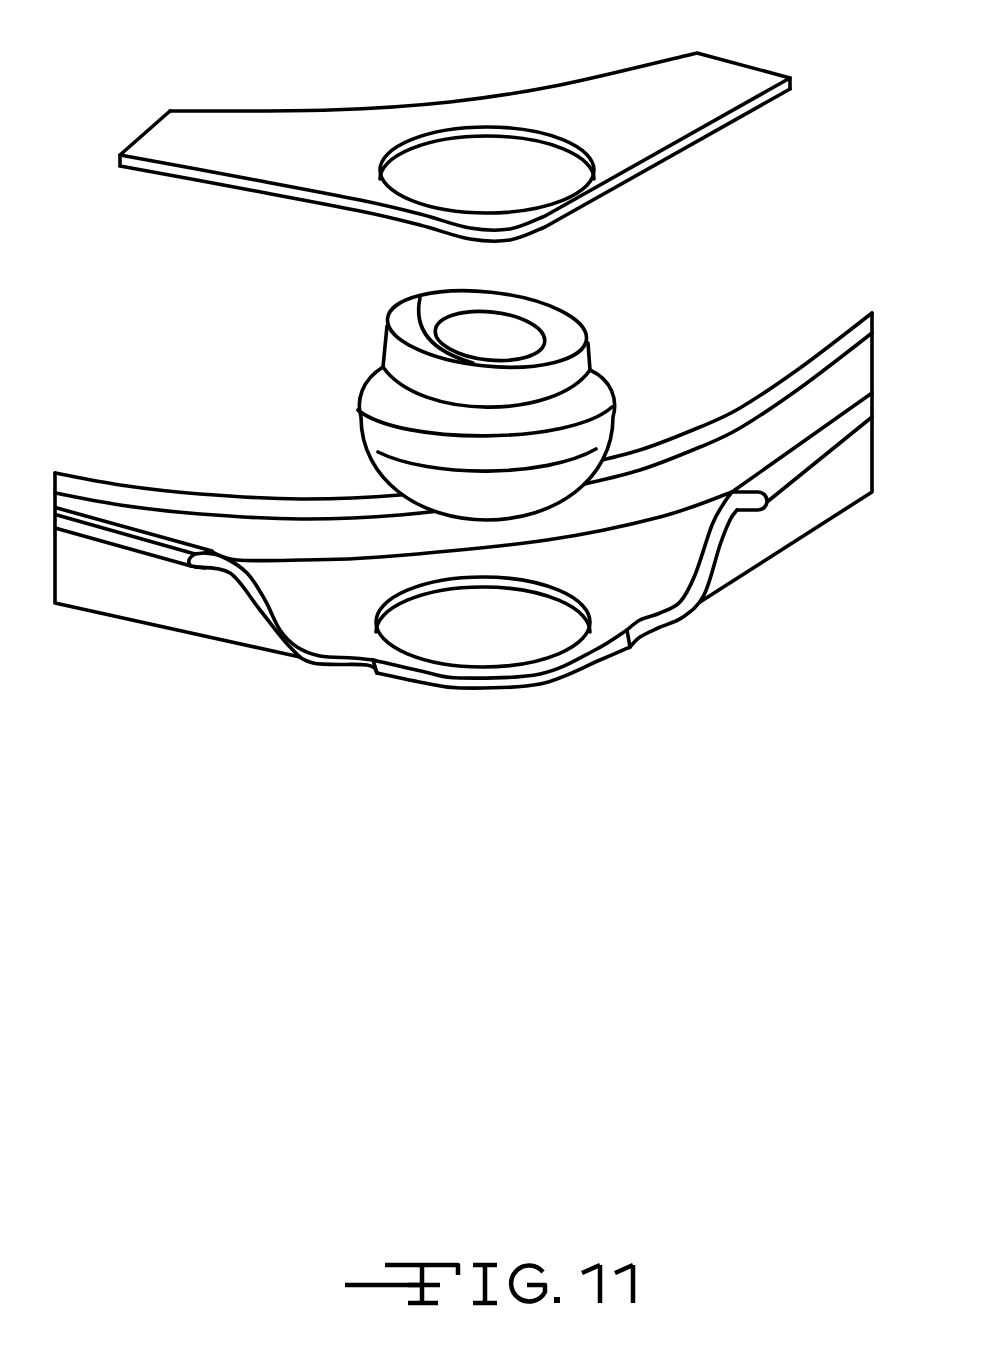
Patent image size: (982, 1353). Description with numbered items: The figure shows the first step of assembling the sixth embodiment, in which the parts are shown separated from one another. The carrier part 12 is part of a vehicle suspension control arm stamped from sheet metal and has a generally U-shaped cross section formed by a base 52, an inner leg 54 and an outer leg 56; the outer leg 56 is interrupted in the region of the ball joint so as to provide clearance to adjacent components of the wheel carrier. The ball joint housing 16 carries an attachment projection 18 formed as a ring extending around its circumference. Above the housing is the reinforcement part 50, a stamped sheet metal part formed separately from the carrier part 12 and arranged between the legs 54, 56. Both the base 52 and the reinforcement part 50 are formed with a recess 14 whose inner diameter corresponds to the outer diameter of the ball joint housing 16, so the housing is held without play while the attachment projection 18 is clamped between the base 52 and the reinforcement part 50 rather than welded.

The carrier part 12 is at (463, 599).
The recess 14 is at (490, 133).
The ball joint housing 16 is at (570, 353).
The attachment projection 18 is at (597, 402).
The reinforcement part 50 is at (707, 85).
The base 52 is at (337, 600).
The inner leg 54 is at (248, 527).
The outer leg 56 is at (117, 588).